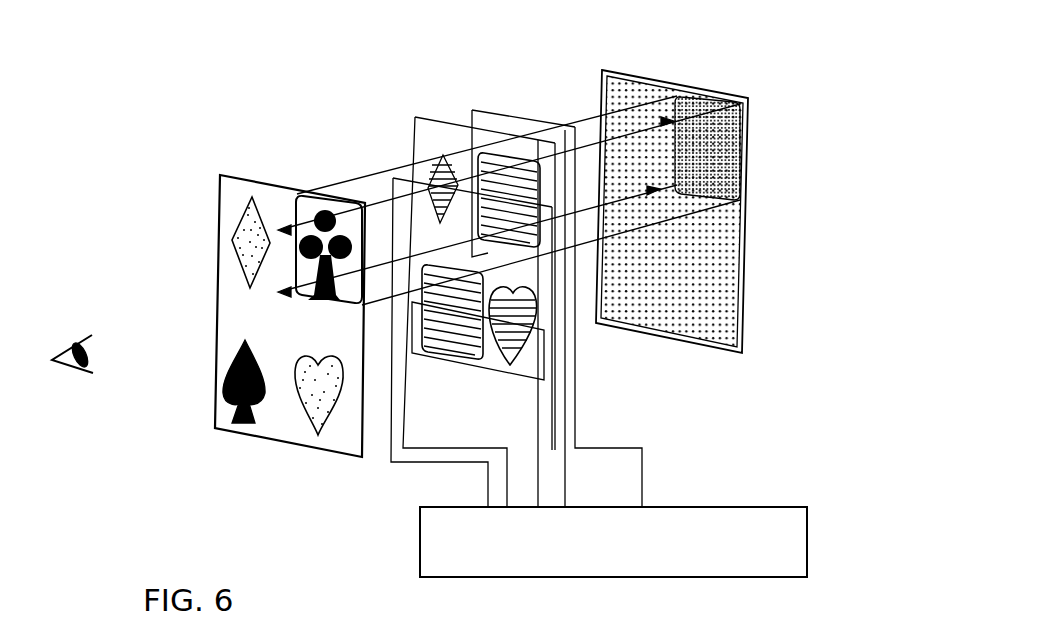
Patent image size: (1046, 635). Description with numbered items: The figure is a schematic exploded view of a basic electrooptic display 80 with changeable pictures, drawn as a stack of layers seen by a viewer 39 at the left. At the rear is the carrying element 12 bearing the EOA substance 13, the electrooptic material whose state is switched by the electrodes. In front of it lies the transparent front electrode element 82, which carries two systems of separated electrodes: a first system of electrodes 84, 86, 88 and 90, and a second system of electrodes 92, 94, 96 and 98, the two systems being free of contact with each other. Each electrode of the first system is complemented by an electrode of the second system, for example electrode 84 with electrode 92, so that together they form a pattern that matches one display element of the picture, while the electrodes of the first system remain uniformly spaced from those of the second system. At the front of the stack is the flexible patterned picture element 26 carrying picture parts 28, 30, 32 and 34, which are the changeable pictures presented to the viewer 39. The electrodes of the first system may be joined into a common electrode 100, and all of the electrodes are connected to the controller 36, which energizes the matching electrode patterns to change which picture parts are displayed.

The carrying element 12 is at (674, 83).
The EOA substance 13 is at (708, 340).
The flexible patterned picture element 26 is at (220, 175).
The picture part 28 is at (237, 242).
The picture part 30 is at (297, 217).
The picture part 32 is at (230, 385).
The picture part 34 is at (317, 415).
The controller 36 is at (807, 540).
The viewer eye 39 is at (72, 362).
The electrooptic display 80 is at (290, 143).
The transparent front electrode element 82 is at (415, 117).
The separated electrode of first system 84 is at (455, 168).
The separated electrode of first system 86 is at (482, 155).
The separated electrode of first system 88 is at (483, 352).
The separated electrode of first system 90 is at (503, 347).
The separated electrode of second system 92 is at (430, 172).
The separated electrode of second system 94 is at (555, 143).
The separated electrode of second system 96 is at (412, 355).
The separated electrode of second system 98 is at (505, 347).
The common electrode 100 is at (642, 492).